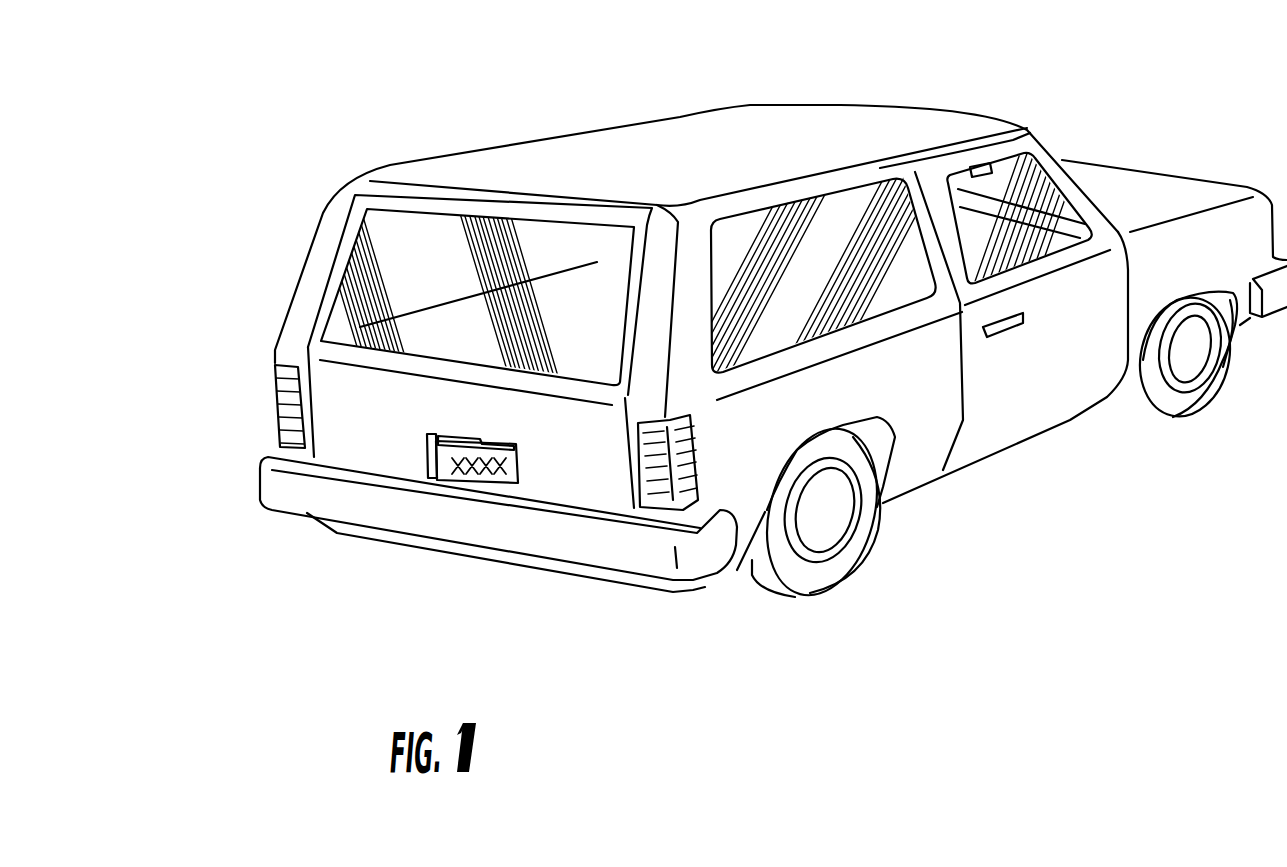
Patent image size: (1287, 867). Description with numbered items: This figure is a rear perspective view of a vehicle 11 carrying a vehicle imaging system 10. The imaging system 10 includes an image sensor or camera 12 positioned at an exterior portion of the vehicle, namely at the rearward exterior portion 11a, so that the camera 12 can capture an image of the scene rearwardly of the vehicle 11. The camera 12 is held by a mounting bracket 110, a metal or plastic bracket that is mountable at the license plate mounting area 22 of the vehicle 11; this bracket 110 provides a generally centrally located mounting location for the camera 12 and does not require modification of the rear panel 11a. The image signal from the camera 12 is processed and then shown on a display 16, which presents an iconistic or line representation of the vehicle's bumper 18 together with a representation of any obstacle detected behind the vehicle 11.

The vehicle imaging system 10 is at (377, 442).
The vehicle 11 is at (713, 128).
The rearward exterior portion 11a is at (577, 470).
The image sensor or camera 12 is at (423, 441).
The display 16 is at (1033, 150).
The iconistic or line representation of the vehicle's bumper 18 is at (367, 513).
The license plate mounting area 22 is at (500, 477).
The mounting bracket 110 is at (483, 432).